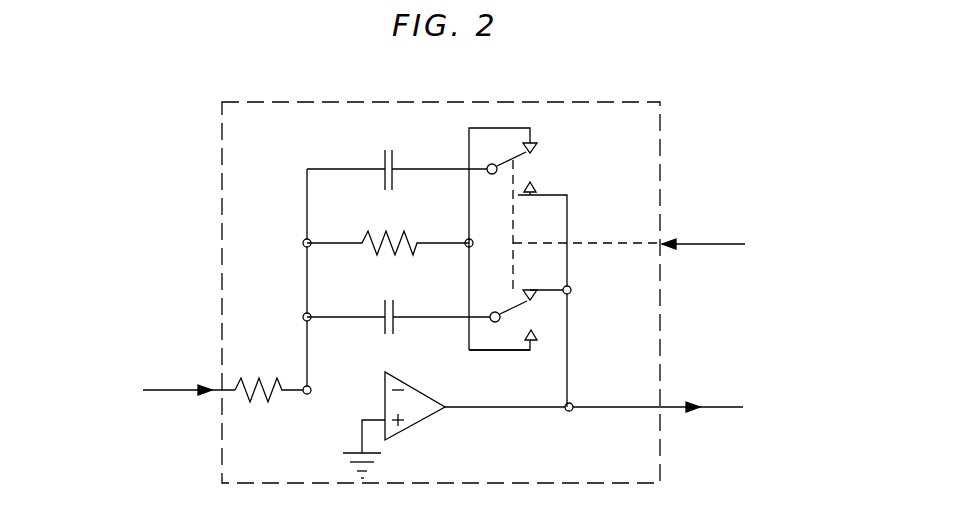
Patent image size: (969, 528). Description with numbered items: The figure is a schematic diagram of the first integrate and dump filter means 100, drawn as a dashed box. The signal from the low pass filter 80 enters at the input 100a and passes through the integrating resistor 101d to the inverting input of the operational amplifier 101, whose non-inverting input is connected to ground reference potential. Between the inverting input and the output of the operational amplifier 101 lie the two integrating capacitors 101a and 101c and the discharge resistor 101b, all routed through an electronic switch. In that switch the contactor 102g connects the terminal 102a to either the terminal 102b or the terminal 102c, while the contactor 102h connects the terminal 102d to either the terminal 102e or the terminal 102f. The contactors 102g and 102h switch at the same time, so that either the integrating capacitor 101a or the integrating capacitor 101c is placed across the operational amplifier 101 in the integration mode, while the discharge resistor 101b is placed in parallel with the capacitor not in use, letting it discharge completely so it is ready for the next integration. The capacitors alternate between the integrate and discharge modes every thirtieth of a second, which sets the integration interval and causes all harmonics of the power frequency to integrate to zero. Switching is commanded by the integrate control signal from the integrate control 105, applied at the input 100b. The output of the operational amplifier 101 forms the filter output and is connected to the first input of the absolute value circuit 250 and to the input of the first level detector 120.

The first integrate and dump filter means 100 is at (575, 102).
The input of first I&D filter means 100a is at (208, 389).
The input of I&D filter means 100b is at (668, 244).
The operational amplifier 101 is at (418, 425).
The integrating capacitor 101a is at (389, 156).
The discharge resistor 101b is at (404, 240).
The integrating capacitor 101c is at (388, 313).
The integrating resistor 101d is at (258, 386).
The terminal 102a is at (500, 163).
The terminal 102b is at (537, 146).
The terminal 102c is at (534, 190).
The terminal 102d is at (494, 312).
The terminal 102e is at (540, 323).
The terminal 102f is at (533, 290).
The contactor 102g is at (566, 226).
The contactor 102h is at (499, 342).
The low pass filter 80 is at (78, 370).
The integrate control 105 is at (776, 264).
The first level detector 120 is at (783, 381).
The absolute value circuit 250 is at (758, 370).